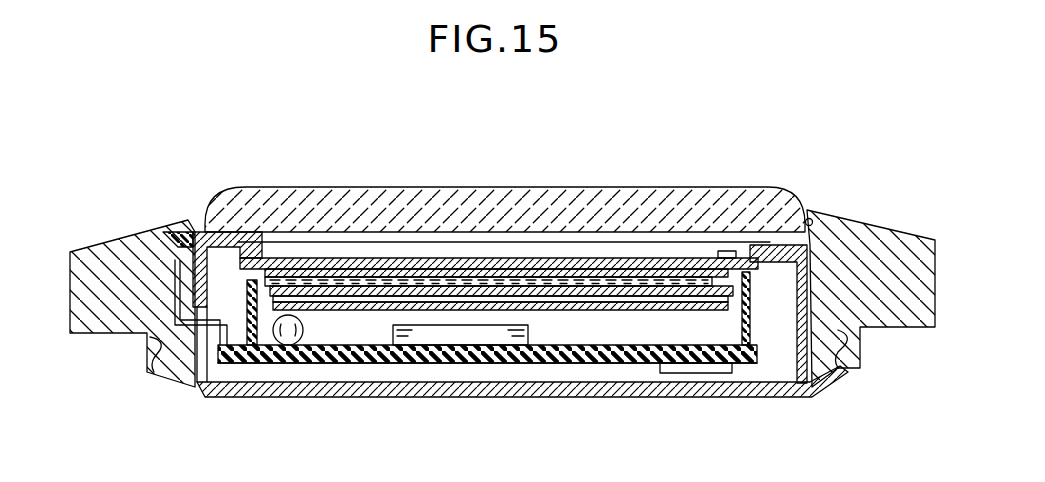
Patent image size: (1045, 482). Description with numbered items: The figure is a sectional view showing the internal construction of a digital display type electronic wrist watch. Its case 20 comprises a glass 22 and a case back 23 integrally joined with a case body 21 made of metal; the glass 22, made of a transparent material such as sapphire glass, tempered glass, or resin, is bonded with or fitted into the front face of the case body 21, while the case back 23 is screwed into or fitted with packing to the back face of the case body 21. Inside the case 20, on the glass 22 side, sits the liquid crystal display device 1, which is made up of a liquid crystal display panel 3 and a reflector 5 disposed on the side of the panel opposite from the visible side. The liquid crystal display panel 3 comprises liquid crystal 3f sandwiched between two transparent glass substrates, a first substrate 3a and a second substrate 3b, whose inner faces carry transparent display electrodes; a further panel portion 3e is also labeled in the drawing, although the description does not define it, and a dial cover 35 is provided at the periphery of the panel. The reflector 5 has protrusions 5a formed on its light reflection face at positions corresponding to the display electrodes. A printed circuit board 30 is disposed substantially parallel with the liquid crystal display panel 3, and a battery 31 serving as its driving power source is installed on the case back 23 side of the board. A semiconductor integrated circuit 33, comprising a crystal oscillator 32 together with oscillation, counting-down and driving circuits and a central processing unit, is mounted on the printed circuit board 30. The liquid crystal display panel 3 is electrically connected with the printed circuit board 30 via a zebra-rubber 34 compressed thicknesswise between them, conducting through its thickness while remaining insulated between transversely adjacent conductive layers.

The case 20 is at (187, 189).
The liquid crystal display device 1 is at (412, 258).
The liquid crystal display panel 3 is at (700, 262).
The first substrate 3a is at (568, 270).
The second substrate 3b is at (363, 297).
The side wall of module case 3e is at (258, 264).
The liquid crystal 3f is at (472, 297).
The reflector 5 is at (630, 312).
The protrusions 5a is at (543, 311).
The case body 21 is at (870, 234).
The glass 22 is at (675, 196).
The case back 23 is at (828, 381).
The printed circuit board 30 is at (588, 359).
The battery 31 is at (697, 374).
The crystal oscillator 32 is at (290, 346).
The semiconductor integrated circuit 33 is at (457, 339).
The zebra-rubber 34 is at (255, 312).
The dial cover 35 is at (775, 240).